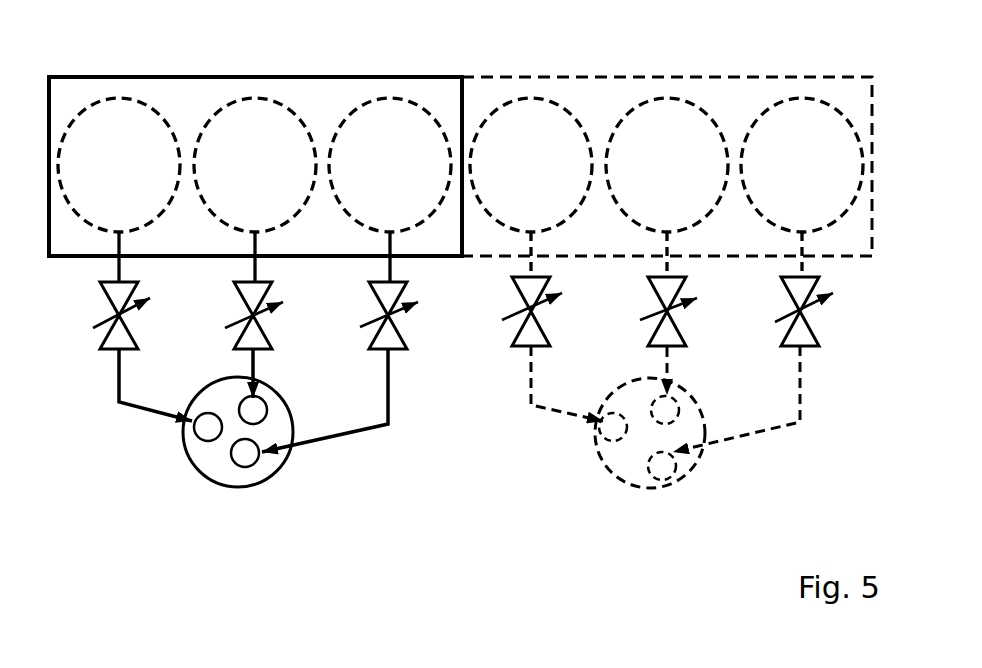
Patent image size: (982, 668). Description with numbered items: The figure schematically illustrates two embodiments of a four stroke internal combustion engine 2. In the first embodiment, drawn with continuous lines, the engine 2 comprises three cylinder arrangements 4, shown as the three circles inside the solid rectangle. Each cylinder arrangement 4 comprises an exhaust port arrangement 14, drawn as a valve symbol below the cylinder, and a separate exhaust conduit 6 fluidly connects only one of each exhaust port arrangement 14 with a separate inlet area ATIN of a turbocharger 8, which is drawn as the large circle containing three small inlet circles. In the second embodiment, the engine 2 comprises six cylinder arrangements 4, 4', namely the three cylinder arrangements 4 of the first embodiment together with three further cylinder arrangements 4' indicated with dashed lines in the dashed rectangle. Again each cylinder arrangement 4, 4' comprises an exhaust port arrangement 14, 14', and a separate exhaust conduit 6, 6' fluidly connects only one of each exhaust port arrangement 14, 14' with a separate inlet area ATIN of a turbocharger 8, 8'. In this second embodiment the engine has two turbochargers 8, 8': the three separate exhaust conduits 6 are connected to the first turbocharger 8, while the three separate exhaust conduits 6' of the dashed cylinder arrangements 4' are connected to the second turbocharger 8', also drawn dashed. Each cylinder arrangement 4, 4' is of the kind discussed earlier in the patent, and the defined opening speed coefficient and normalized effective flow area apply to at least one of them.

The four stroke internal combustion engine 2 is at (113, 62).
The cylinder arrangement 4 is at (283, 373).
The cylinder arrangement 4' is at (727, 363).
The exhaust conduit 6 is at (224, 392).
The exhaust conduit 6' is at (666, 419).
The turbocharger 8 is at (252, 448).
The turbocharger 8' is at (634, 448).
The exhaust port arrangement 14 is at (249, 331).
The exhaust port arrangement 14' is at (694, 358).
The inlet area ATIN is at (687, 495).